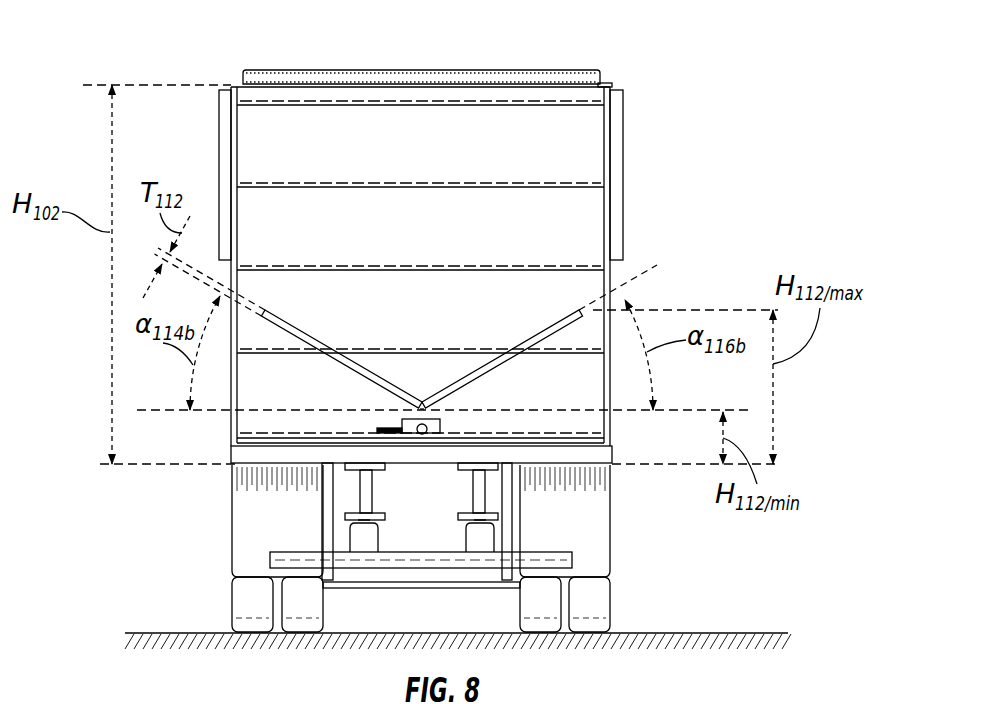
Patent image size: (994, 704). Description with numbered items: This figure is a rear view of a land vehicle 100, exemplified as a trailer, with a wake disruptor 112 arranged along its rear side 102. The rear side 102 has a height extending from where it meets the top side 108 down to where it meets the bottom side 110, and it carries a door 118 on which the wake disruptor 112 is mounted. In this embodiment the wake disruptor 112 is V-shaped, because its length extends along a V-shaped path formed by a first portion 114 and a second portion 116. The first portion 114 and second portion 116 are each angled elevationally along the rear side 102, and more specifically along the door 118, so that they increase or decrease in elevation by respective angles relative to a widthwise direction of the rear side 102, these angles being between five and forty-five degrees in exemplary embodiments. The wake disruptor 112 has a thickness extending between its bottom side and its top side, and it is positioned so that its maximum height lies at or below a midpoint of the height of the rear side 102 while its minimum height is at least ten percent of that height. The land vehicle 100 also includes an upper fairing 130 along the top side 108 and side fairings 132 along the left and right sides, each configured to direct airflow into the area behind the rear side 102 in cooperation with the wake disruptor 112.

The land vehicle 100 is at (695, 53).
The rear side 102 is at (604, 455).
The top side 108 is at (607, 84).
The bottom side 110 is at (585, 466).
The wake disruptor 112 is at (455, 380).
The first portion 114 is at (305, 333).
The second portion 116 is at (537, 335).
The door 118 is at (497, 113).
The upper fairing 130 is at (267, 72).
The side fairing 132 is at (226, 178).